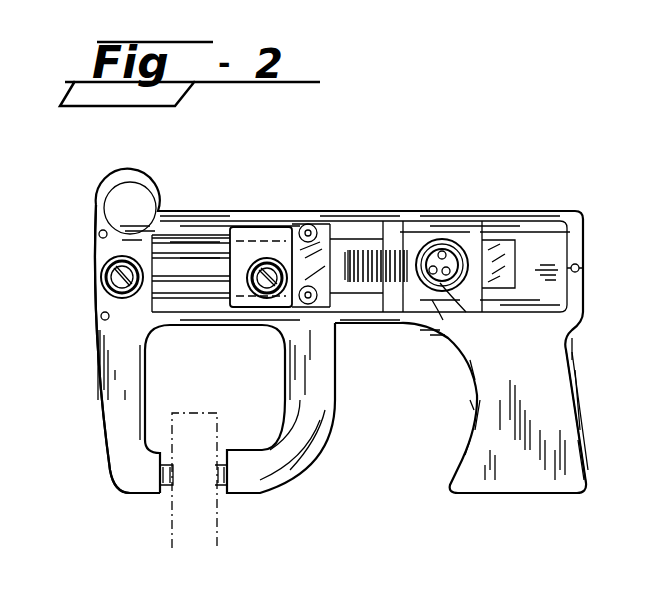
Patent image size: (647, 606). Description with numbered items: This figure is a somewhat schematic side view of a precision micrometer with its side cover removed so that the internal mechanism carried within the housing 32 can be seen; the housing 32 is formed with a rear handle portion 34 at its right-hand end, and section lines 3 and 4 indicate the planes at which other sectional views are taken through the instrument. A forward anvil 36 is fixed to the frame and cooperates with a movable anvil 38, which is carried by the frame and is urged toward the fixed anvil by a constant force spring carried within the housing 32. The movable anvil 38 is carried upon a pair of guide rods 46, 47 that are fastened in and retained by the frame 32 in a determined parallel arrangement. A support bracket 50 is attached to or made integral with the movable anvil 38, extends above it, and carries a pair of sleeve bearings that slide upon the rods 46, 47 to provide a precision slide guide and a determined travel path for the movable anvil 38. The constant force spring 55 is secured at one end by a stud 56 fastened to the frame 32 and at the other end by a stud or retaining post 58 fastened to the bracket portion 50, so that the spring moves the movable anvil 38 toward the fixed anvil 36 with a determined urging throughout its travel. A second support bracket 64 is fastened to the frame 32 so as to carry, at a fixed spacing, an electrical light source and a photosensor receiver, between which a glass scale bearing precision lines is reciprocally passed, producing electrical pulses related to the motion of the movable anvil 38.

The section line 3- 3 is at (308, 122).
The section line 4- 4 is at (445, 122).
The housing 32 is at (585, 211).
The rear handle portion 34 is at (572, 432).
The forward anvil 36 is at (117, 428).
The movable anvil 38 is at (320, 436).
The guide rod 46 is at (183, 238).
The guide rod 47 is at (172, 292).
The support bracket 50 is at (247, 227).
The constant force spring 55 is at (97, 270).
The stud 56 is at (100, 290).
The retaining post 58 is at (262, 308).
The support bracket 64 is at (428, 305).